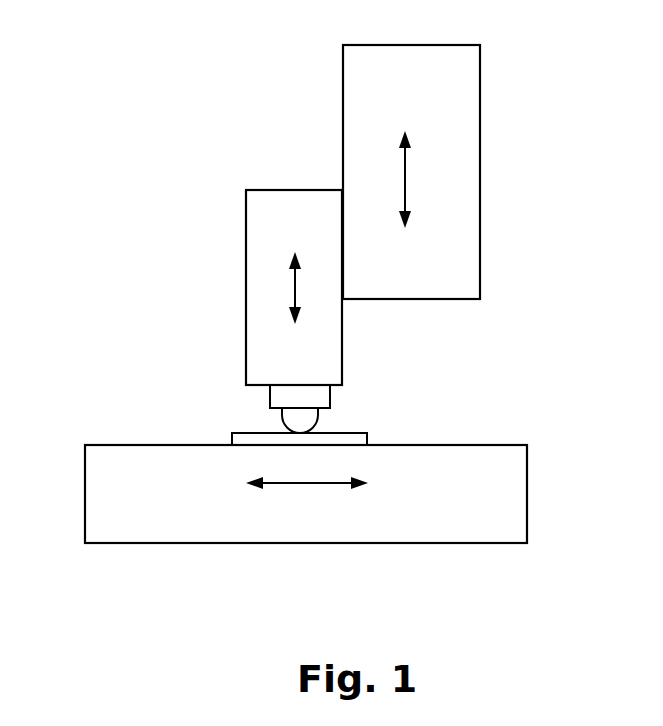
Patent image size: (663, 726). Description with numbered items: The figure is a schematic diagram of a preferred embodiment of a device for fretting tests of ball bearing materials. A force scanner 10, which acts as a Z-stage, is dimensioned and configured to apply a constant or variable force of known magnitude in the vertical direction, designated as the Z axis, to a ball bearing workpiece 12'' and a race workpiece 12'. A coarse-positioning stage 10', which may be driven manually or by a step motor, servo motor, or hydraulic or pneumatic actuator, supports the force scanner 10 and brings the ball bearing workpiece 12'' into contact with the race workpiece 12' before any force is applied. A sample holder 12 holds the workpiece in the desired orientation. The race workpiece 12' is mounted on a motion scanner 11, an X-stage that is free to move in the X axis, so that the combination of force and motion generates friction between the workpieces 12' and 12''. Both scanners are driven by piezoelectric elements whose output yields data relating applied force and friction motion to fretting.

The force scanner 10 is at (216, 233).
The coarse-positioning stage 10' is at (477, 172).
The motion scanner 11 is at (527, 490).
The sample holder 12 is at (174, 353).
The race workpiece 12' is at (192, 414).
The ball bearing workpiece 12'' is at (369, 394).